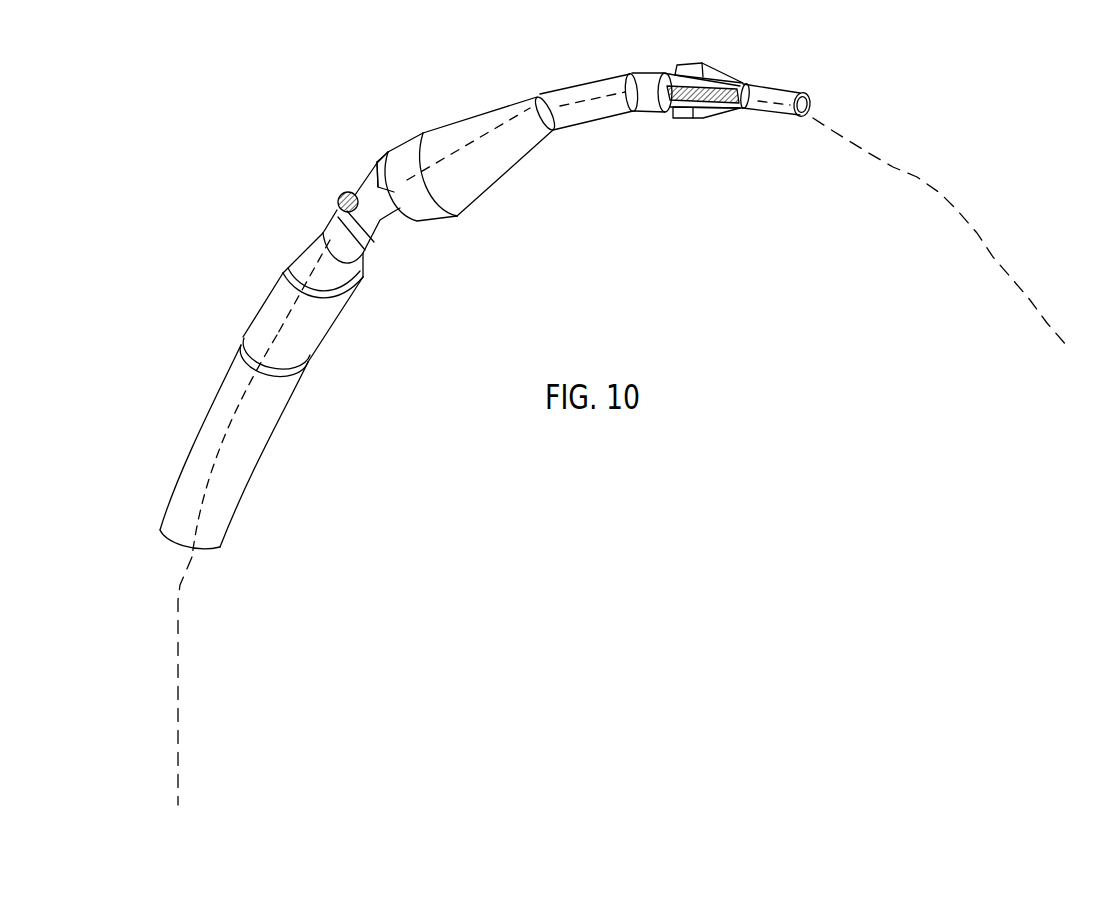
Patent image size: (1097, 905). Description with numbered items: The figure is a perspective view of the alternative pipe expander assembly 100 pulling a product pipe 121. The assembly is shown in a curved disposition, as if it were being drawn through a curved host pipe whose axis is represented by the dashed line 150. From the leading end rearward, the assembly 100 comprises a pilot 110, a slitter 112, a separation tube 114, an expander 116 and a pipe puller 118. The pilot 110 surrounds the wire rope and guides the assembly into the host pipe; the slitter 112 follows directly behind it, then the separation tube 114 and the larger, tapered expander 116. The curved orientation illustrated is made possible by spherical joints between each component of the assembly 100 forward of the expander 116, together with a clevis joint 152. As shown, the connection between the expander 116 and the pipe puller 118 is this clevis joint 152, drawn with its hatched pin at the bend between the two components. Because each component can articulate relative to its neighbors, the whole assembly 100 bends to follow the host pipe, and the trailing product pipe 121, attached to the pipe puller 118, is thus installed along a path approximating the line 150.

The pipe expander assembly 100 is at (268, 133).
The pilot 110 is at (777, 83).
The slitter 112 is at (710, 117).
The separation tube 114 is at (580, 83).
The expander 116 is at (493, 177).
The pipe puller 118 is at (274, 283).
The product pipe 121 is at (257, 453).
The line representing host pipe axis 150 is at (915, 173).
The clevis joint 152 is at (338, 199).